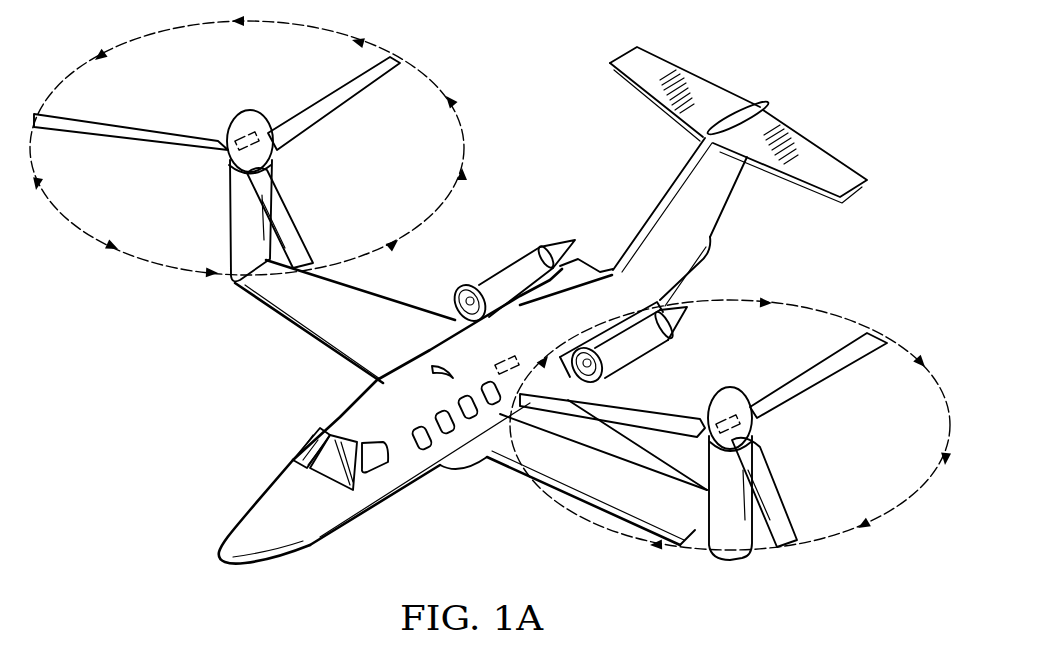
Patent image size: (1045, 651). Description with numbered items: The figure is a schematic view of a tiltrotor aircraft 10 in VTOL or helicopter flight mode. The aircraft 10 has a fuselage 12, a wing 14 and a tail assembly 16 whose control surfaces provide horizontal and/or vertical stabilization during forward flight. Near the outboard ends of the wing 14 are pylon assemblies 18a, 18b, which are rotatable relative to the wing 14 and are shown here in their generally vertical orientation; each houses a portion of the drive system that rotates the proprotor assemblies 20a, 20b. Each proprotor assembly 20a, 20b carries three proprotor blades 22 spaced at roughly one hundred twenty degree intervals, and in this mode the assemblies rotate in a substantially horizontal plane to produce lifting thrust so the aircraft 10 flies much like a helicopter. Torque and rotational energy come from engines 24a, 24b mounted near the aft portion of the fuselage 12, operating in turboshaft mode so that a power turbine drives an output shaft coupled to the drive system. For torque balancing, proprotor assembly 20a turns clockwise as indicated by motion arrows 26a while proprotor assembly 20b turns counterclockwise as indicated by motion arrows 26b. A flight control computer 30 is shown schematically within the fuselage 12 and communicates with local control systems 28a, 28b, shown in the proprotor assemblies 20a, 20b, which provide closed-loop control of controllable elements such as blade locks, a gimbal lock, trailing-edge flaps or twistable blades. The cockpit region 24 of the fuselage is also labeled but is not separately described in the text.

The tiltrotor aircraft 10 is at (846, 110).
The fuselage 12 is at (300, 533).
The wing 14 is at (407, 310).
The tail assembly 16 is at (715, 97).
The pylon assembly 18a is at (709, 508).
The pylon assembly 18b is at (229, 200).
The proprotor assembly 20a is at (804, 402).
The proprotor assembly 20b is at (330, 132).
The proprotor blades 22 is at (323, 100).
The cockpit 24 is at (300, 453).
The engine 24a is at (645, 337).
The engine 24b is at (517, 250).
The motion arrows 26a is at (826, 316).
The motion arrows 26b is at (466, 144).
The local control system 28a is at (717, 409).
The local control system 28b is at (239, 128).
The flight control computer 30 is at (497, 352).